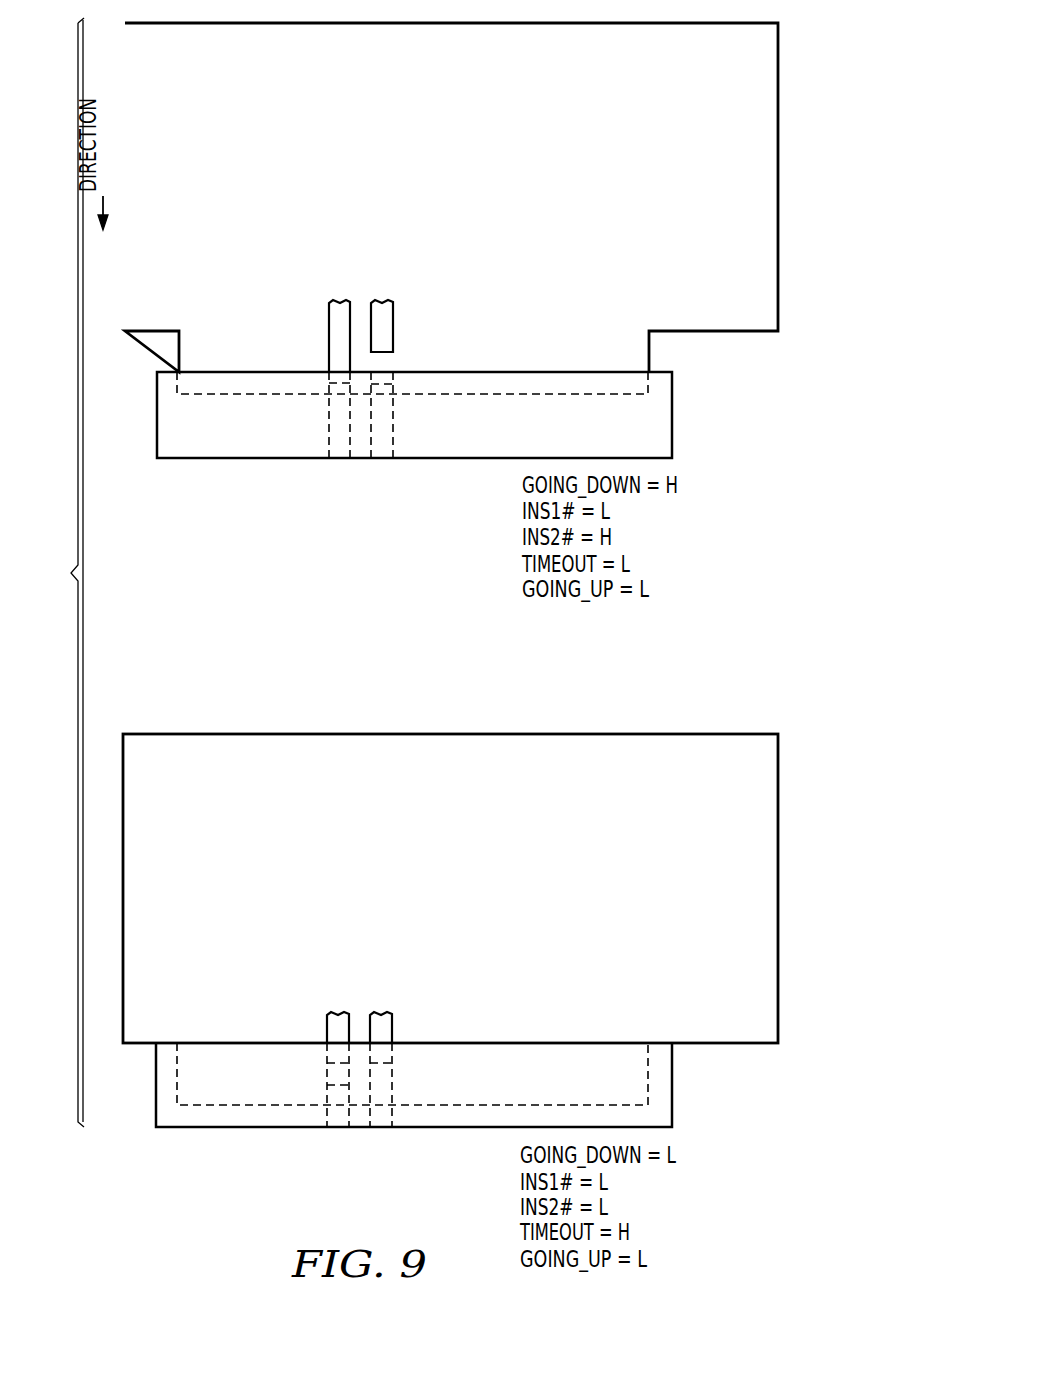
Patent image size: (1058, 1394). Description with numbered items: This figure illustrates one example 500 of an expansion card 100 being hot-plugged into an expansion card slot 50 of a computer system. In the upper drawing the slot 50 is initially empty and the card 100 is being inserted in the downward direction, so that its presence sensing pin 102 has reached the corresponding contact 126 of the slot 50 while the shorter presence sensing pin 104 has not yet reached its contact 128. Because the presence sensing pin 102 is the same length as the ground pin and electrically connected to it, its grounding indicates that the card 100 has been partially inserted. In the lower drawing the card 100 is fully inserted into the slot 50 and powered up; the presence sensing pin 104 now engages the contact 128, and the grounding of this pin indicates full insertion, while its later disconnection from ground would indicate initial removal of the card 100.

The example 500 is at (57, 524).
The expansion card 100 is at (530, 144).
The expansion card slot 50 is at (524, 437).
The presence sensing pin 102 is at (337, 300).
The presence sensing pin 104 is at (393, 310).
The contact 126 is at (339, 458).
The contact 128 is at (381, 458).